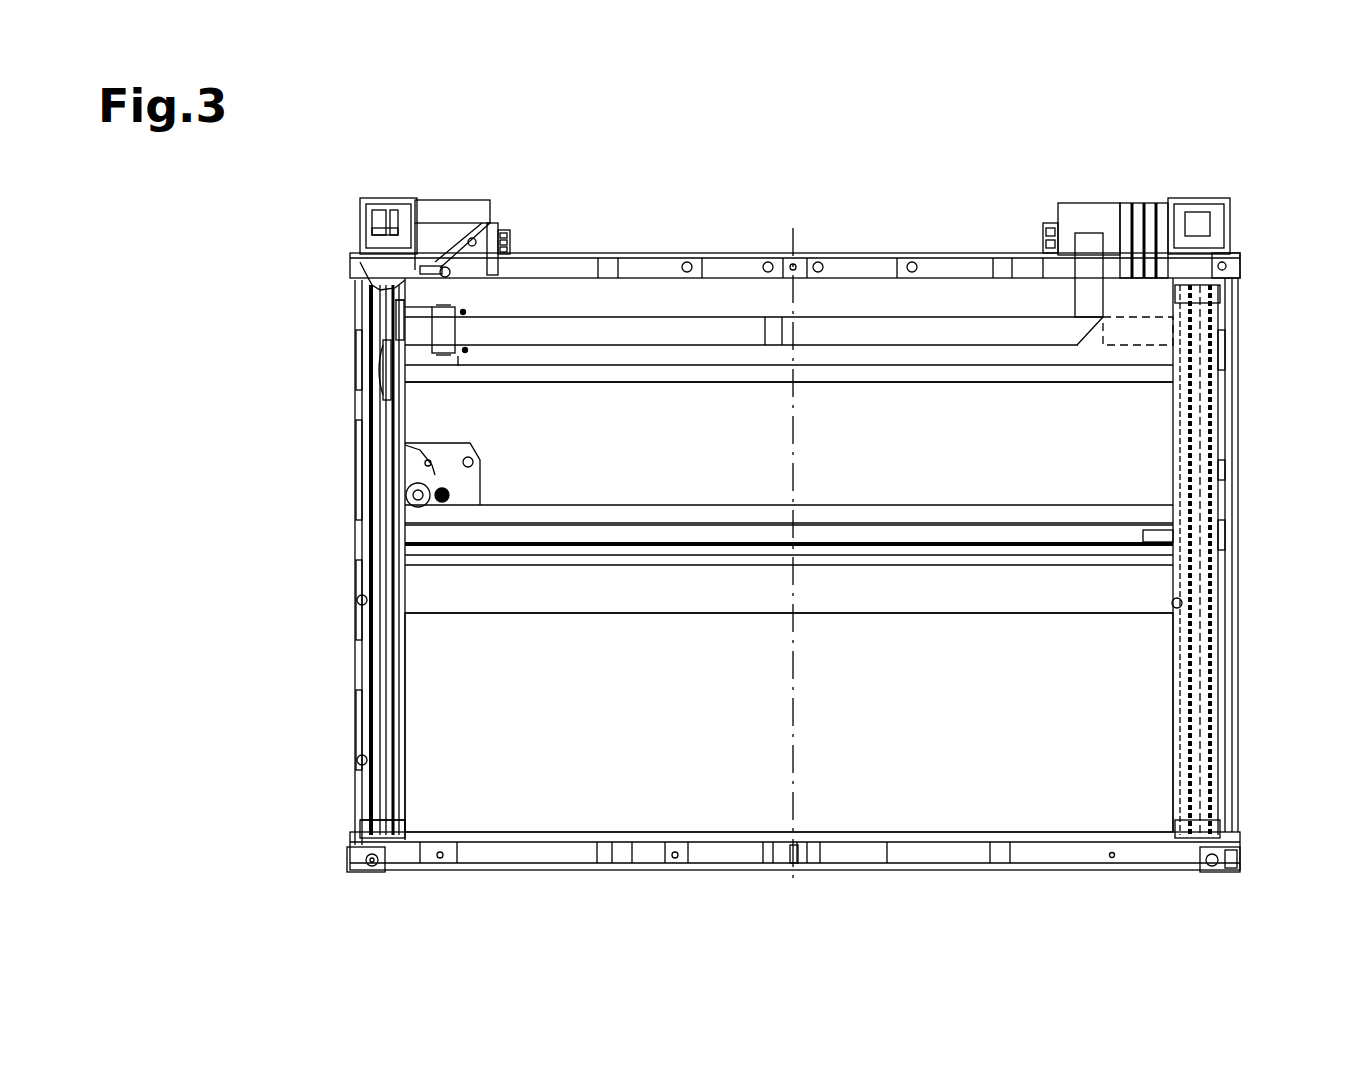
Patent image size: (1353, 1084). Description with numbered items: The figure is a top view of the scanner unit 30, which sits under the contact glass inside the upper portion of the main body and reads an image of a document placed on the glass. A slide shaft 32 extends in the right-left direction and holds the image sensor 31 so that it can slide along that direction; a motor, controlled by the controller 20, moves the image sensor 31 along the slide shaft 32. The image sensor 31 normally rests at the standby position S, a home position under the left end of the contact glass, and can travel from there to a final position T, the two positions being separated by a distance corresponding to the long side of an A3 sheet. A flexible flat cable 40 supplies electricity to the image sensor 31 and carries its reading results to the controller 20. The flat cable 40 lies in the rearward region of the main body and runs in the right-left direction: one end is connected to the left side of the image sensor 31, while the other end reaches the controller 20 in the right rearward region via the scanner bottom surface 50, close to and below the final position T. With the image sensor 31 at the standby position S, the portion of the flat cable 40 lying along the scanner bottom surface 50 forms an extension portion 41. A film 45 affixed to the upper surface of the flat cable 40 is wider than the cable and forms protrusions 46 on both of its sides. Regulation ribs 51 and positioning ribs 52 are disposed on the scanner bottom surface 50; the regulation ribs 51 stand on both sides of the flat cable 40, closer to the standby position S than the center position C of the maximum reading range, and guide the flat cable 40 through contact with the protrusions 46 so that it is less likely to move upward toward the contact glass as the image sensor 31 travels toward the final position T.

The scanner unit 30 is at (572, 808).
The image sensor 31 is at (372, 704).
The slide shaft 32 is at (980, 566).
The flat cable 40 is at (652, 330).
The extension portion 41 is at (595, 345).
The film 45 is at (355, 327).
The protrusions 46 is at (452, 300).
The scanner bottom surface 50 is at (789, 722).
The regulation ribs 51 is at (465, 312).
The positioning ribs 52 is at (420, 274).
The controller 20 is at (1060, 213).
The center position C is at (792, 542).
The standby position S is at (378, 845).
The final position T is at (1220, 392).